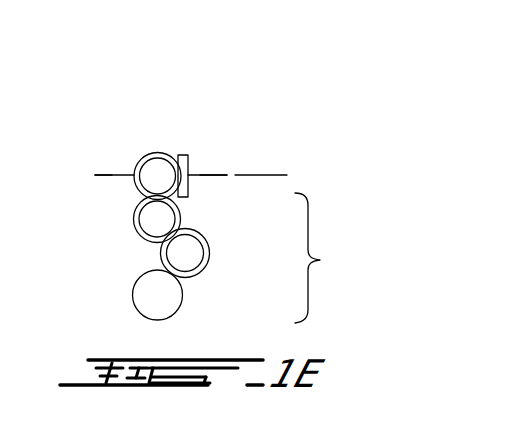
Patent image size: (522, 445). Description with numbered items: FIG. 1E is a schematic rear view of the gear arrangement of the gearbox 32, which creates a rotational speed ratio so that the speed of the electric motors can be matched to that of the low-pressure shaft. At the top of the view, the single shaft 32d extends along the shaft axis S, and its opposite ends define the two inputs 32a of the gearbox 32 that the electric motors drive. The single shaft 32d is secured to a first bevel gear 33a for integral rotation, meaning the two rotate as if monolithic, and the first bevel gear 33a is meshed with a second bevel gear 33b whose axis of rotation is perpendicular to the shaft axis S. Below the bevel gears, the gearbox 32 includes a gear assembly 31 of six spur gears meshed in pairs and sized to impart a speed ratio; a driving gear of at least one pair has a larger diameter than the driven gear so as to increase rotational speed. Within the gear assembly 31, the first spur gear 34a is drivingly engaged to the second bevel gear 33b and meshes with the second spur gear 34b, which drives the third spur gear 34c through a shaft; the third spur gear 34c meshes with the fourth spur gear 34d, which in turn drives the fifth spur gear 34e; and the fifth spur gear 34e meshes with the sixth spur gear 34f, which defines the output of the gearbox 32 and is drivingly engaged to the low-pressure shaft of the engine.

The gearbox 32 is at (288, 137).
The inputs 32a is at (220, 172).
The single shaft 32d is at (112, 175).
The first bevel gear 33a is at (188, 188).
The second bevel gear 33b is at (134, 187).
The first spur gear 34a is at (143, 153).
The second spur gear 34b is at (181, 216).
The third spur gear 34c is at (136, 233).
The fourth spur gear 34d is at (210, 253).
The fifth spur gear 34e is at (161, 256).
The sixth spur gear 34f is at (182, 295).
The gear assembly 31 is at (321, 258).
The shaft axis S is at (261, 175).